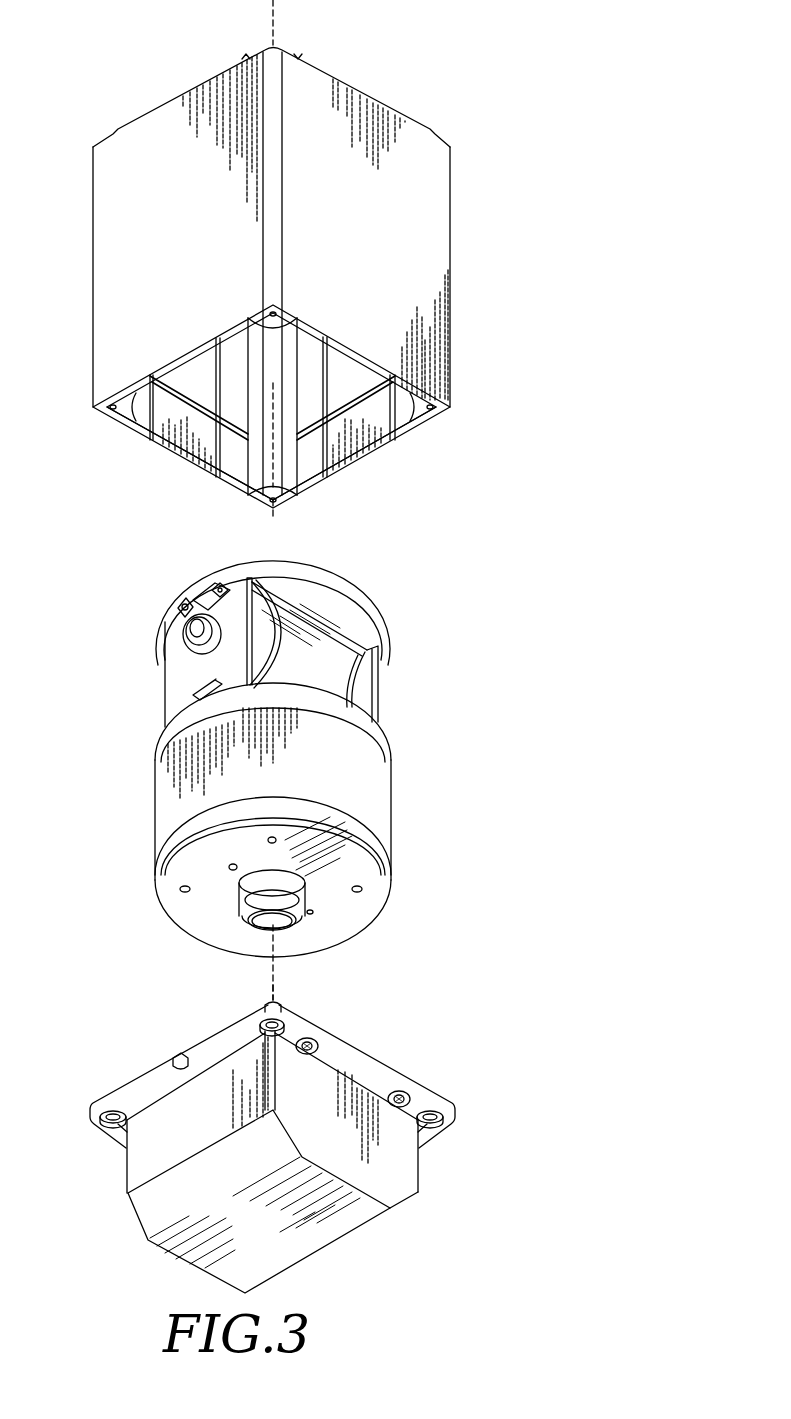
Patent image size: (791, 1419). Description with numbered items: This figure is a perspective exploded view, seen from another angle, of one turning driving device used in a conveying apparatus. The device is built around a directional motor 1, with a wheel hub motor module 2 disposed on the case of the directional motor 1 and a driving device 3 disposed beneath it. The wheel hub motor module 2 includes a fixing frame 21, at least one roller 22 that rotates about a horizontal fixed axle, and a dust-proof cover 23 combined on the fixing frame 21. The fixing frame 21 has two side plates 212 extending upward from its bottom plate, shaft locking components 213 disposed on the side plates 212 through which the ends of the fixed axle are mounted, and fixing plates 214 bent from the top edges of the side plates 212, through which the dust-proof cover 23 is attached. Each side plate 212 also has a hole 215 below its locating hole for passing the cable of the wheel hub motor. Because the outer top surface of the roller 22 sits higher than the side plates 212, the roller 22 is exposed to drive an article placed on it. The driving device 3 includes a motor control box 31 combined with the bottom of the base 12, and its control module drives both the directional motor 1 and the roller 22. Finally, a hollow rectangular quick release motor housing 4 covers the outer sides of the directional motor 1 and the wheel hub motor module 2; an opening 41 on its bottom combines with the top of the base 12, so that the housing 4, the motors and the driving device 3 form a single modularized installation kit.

The directional motor 1 is at (373, 800).
The wheel hub motor module 2 is at (264, 631).
The driving device 3 is at (269, 1139).
The quick release motor housing 4 is at (84, 285).
The base 12 is at (160, 1070).
The fixing frame 21 is at (390, 702).
The roller 22 is at (327, 677).
The dust-proof cover 23 is at (340, 578).
The motor control box 31 is at (400, 1172).
The opening 41 is at (357, 450).
The side plate 212 is at (235, 620).
The shaft locking component 213 is at (188, 628).
The fixing plate 214 is at (190, 600).
The hole 215 is at (192, 693).